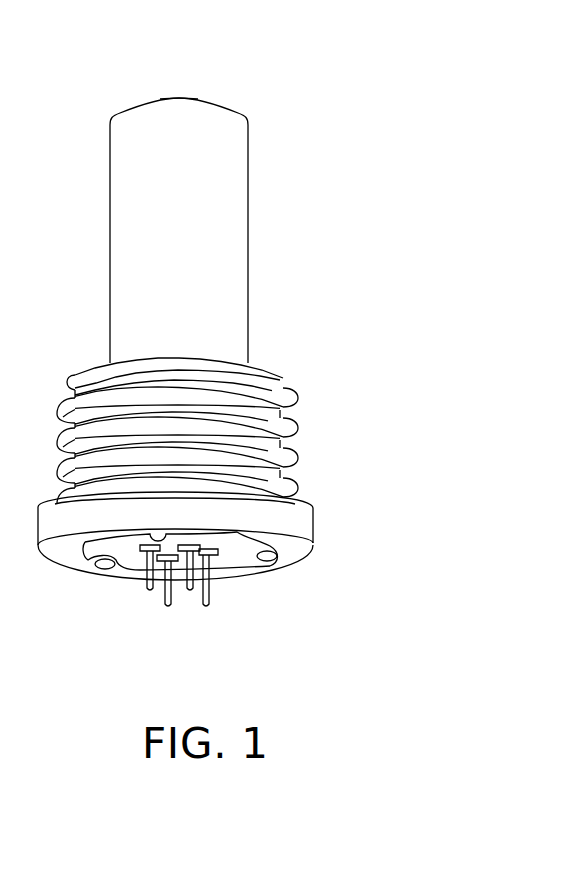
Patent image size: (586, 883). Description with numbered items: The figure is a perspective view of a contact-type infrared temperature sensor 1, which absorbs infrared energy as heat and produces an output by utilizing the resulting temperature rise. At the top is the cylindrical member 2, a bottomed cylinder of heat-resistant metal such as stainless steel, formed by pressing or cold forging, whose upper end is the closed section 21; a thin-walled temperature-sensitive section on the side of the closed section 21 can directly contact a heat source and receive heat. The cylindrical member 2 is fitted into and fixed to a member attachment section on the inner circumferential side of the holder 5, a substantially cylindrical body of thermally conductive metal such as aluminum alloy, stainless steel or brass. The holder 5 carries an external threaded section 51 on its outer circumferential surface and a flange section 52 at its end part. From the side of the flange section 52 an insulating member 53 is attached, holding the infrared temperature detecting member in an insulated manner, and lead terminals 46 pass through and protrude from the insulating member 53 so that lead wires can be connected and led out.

The contact-type infrared temperature sensor 1 is at (306, 229).
The cylindrical member 2 is at (122, 226).
The closed section 21 is at (183, 92).
The holder 5 is at (263, 441).
The external threaded section 51 is at (285, 398).
The flange section 52 is at (302, 528).
The insulating member 53 is at (130, 546).
The lead terminals 46 is at (166, 608).